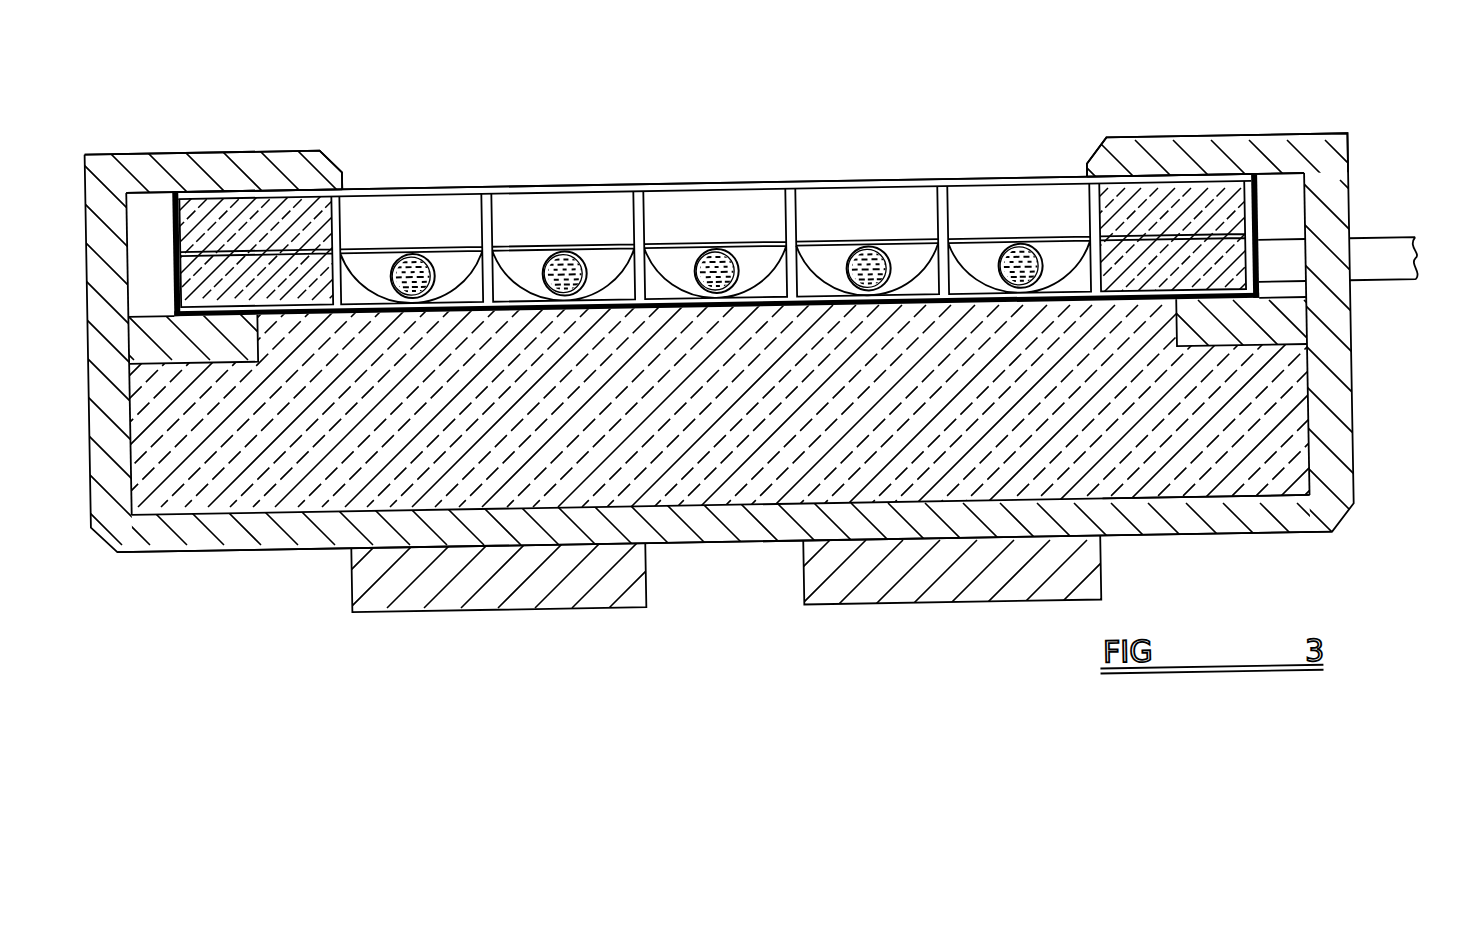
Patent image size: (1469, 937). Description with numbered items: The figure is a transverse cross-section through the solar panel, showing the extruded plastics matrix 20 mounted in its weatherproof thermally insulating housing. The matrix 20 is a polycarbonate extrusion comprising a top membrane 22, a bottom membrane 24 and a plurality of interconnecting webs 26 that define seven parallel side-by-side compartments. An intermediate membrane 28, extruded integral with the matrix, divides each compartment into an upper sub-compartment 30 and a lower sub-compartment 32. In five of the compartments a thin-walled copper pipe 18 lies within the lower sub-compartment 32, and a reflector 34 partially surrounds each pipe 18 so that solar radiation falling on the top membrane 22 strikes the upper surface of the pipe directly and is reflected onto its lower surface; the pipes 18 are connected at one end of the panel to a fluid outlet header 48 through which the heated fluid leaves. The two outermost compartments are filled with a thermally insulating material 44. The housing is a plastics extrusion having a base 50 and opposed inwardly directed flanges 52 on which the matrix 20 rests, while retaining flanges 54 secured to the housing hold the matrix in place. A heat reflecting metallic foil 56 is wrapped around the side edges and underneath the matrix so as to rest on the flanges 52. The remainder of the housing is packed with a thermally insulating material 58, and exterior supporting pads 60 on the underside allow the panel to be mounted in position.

The thin-walled hollow pipe 18 is at (550, 255).
The extruded plastics matrix 20 is at (784, 172).
The top membrane 22 is at (1049, 185).
The bottom membrane 24 is at (504, 303).
The interconnecting webs 26 is at (665, 226).
The intermediate membrane 28 is at (922, 243).
The upper sub-compartment 30 is at (419, 230).
The lower sub-compartment 32 is at (811, 300).
The reflector 34 is at (959, 297).
The thermally insulating material 44 is at (284, 270).
The fluid outlet header 48 is at (1374, 294).
The base 50 is at (270, 533).
The inwardly directed flanges 52 is at (182, 341).
The retaining flanges 54 is at (175, 171).
The heat reflecting metallic foil 56 is at (178, 258).
The thermally insulating material 58 is at (1248, 476).
The exterior supporting pads 60 is at (894, 597).